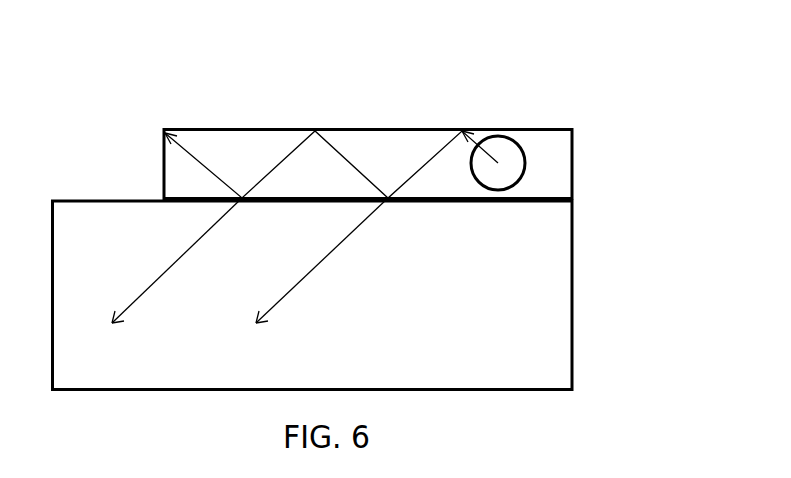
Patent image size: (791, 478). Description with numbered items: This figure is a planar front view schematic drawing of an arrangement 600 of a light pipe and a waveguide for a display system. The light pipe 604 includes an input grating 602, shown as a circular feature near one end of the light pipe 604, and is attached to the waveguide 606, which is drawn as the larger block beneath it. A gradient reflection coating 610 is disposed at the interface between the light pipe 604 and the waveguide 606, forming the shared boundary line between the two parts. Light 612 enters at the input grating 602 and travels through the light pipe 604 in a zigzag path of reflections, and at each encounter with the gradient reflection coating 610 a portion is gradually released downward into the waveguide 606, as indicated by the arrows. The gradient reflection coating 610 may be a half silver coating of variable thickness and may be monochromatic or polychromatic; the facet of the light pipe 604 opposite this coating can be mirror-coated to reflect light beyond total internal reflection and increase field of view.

The optical device 600 is at (560, 102).
The input grating 602 is at (527, 150).
The light pipe 604 is at (558, 165).
The waveguide 606 is at (573, 258).
The gradient reflection coating 610 is at (543, 198).
The light 612 is at (297, 143).